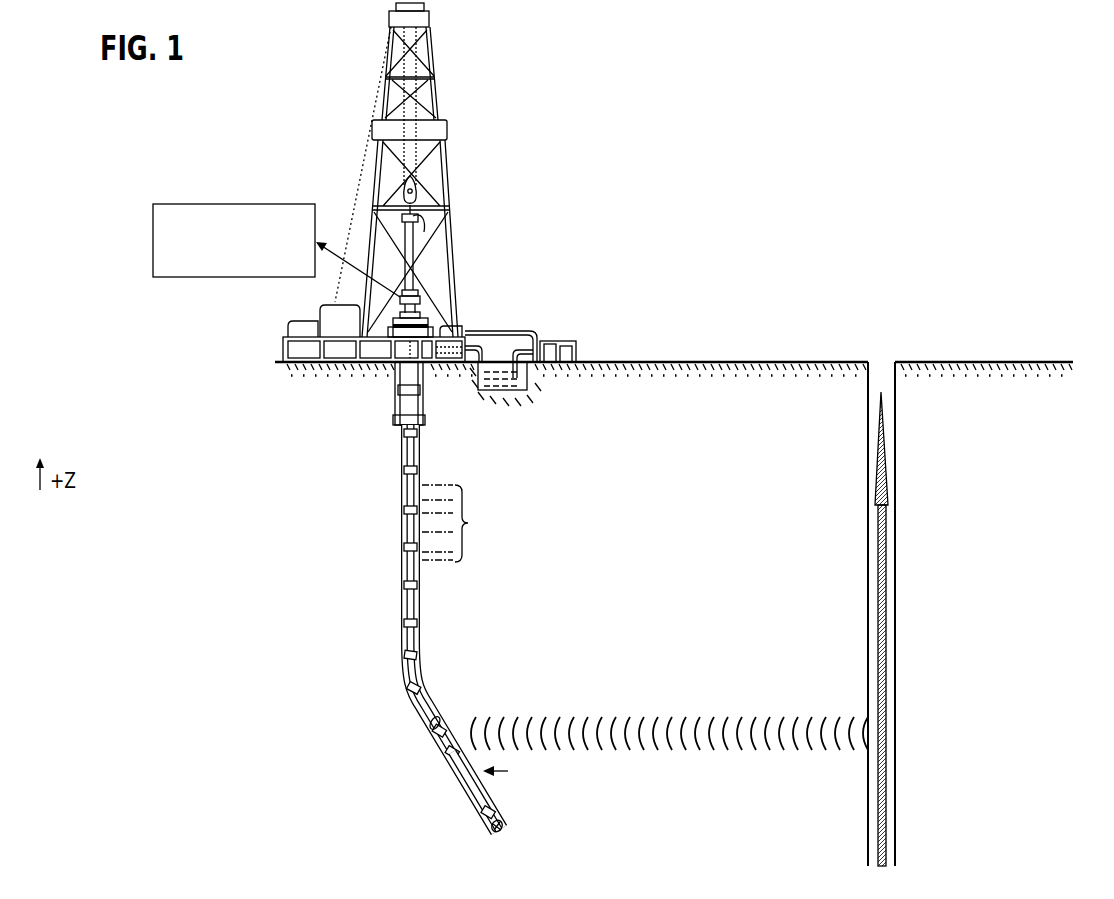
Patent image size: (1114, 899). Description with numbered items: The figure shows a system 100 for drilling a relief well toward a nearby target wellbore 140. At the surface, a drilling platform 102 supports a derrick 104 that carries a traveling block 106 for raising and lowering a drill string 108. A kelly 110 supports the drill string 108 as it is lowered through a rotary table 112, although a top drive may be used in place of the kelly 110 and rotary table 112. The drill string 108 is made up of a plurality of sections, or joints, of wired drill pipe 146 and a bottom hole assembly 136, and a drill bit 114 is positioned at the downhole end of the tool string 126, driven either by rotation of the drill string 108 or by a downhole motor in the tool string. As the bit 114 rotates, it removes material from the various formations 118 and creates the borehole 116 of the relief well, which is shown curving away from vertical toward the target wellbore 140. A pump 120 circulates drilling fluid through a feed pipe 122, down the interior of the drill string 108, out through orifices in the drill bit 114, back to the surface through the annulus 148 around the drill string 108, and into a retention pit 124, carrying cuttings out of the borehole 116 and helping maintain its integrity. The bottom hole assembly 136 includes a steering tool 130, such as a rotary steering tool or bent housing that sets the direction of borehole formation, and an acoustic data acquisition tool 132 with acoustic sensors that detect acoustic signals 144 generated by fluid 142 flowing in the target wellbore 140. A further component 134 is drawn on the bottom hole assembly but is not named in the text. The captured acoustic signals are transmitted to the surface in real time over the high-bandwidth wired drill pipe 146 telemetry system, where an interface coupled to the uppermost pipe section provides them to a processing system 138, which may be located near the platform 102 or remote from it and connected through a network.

The system 100 is at (480, 28).
The drilling platform 102 is at (281, 344).
The derrick 104 is at (436, 99).
The traveling block 106 is at (419, 186).
The drill string 108 is at (413, 463).
The kelly 110 is at (413, 240).
The rotary table 112 is at (420, 321).
The drill bit 114 is at (503, 823).
The borehole 116 is at (421, 468).
The formations 118 is at (465, 523).
The pump 120 is at (547, 342).
The feed pipe 122 is at (512, 331).
The retention pit 124 is at (503, 381).
The tool string 126 is at (414, 294).
The steering tool 130 is at (462, 772).
The acoustic data acquisition tool 132 is at (442, 740).
The telemetry module 134 is at (436, 733).
The bottom hole assembly 136 is at (515, 771).
The processing system 138 is at (247, 205).
The target wellbore 140 is at (868, 558).
The fluid 142 is at (878, 619).
The acoustic signals 144 is at (613, 716).
The wired drill pipe 146 is at (406, 605).
The annulus 148 is at (422, 673).